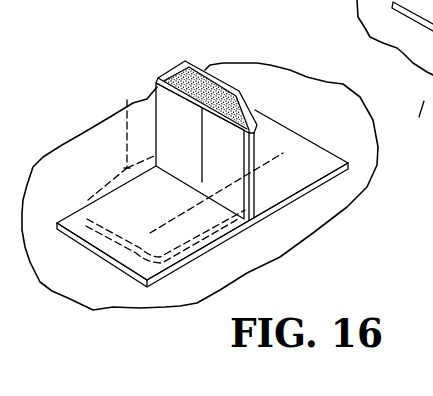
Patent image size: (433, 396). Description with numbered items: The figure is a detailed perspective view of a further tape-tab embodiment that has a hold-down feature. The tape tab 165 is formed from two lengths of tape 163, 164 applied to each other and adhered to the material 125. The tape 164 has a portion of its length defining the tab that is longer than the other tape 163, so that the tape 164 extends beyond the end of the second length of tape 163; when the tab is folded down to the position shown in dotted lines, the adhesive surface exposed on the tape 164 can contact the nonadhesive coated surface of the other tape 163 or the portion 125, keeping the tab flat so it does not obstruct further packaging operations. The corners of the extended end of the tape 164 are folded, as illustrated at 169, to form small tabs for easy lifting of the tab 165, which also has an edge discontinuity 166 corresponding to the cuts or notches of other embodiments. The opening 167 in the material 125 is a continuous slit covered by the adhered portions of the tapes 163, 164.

The material 125 is at (378, 167).
The second length of tape 163 is at (197, 258).
The first length of tape 164 is at (308, 190).
The tape tab 165 is at (168, 115).
The edge discontinuity 166 is at (224, 97).
The opening 167 is at (118, 268).
The folded corners 169 is at (167, 71).